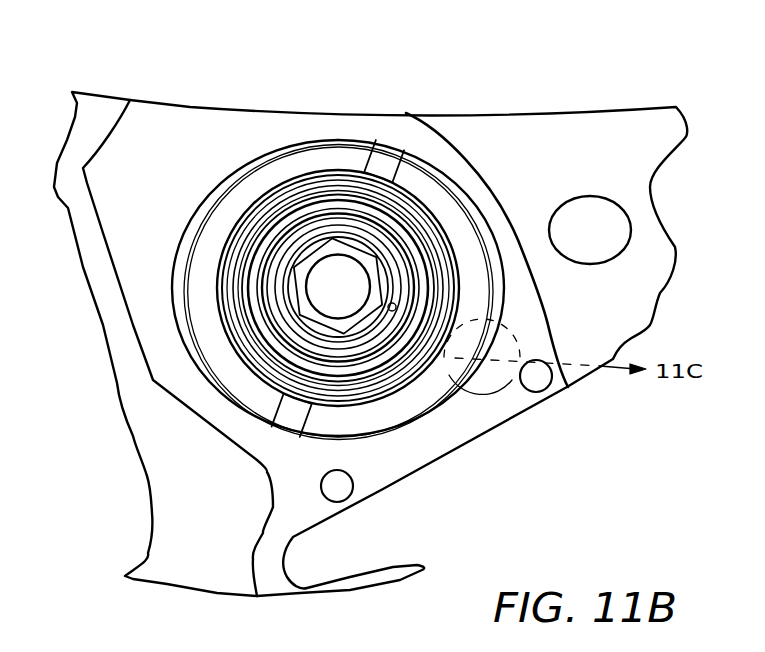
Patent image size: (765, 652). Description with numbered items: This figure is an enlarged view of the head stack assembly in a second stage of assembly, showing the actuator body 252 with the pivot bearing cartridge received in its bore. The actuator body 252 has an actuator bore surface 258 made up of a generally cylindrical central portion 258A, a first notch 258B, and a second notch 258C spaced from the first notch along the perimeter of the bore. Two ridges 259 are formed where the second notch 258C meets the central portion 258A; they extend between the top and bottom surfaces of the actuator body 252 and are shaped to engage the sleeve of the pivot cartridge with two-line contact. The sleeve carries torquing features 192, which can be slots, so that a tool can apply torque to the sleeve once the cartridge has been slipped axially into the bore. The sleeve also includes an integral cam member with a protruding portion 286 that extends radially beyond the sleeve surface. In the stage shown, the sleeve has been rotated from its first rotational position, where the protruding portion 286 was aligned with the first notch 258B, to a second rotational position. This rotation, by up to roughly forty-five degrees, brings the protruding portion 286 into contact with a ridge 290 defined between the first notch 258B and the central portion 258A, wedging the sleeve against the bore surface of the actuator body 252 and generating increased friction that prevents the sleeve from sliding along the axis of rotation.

The actuator body 252 is at (556, 127).
The actuator bore surface 258 is at (474, 217).
The central portion 258A is at (406, 113).
The first notch 258B is at (505, 300).
The second notch 258C is at (203, 183).
The ridges 259 is at (297, 140).
The torquing features 192 is at (383, 143).
The protruding portion 286 is at (480, 362).
The ridge 290 is at (453, 387).